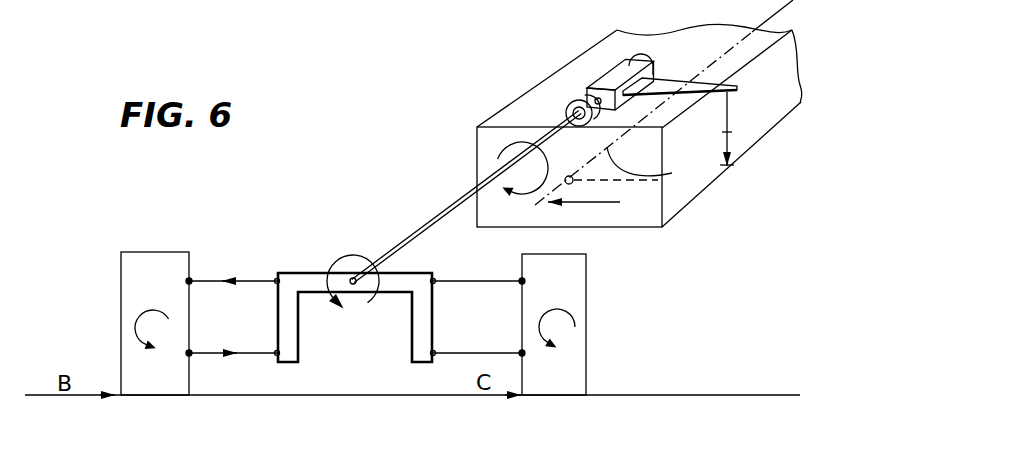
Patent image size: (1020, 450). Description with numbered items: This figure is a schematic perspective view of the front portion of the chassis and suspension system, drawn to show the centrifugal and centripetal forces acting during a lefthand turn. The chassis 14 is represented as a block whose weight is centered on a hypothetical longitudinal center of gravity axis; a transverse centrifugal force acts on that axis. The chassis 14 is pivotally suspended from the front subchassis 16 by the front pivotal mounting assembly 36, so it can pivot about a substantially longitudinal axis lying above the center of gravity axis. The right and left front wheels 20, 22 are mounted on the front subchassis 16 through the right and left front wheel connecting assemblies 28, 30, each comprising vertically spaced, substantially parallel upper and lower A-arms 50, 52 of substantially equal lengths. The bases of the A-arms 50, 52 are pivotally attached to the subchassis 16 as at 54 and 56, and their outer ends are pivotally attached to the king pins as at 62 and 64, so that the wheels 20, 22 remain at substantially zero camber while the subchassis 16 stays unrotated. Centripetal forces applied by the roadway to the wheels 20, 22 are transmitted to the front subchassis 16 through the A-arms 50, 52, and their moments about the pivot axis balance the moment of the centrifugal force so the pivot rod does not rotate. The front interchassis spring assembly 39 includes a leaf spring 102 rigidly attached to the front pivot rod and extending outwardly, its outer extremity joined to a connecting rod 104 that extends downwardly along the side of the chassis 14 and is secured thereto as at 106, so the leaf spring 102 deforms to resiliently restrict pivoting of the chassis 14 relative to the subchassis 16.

The chassis 14 is at (523, 108).
The front subchassis 16 is at (313, 268).
The right front wheel 20 is at (150, 270).
The left front wheel 22 is at (578, 306).
The right front wheel connecting assembly 28 is at (258, 270).
The left front wheel connecting assembly 30 is at (493, 272).
The front pivotal mounting assembly 36 is at (582, 90).
The front interchassis spring assembly 39 is at (661, 81).
The upper A-arm 50 is at (210, 279).
The lower A-arm 52 is at (240, 352).
The upper A-arm pivotal attachment to subchassis 54 is at (275, 362).
The lower A-arm pivotal attachment to subchassis 56 is at (434, 283).
The upper A-arm pivotal attachment to king pin 62 is at (190, 280).
The lower A-arm pivotal attachment to king pin 64 is at (190, 354).
The leaf spring 102 is at (718, 80).
The connecting rod 104 is at (728, 132).
The connecting rod attachment to chassis 106 is at (727, 165).